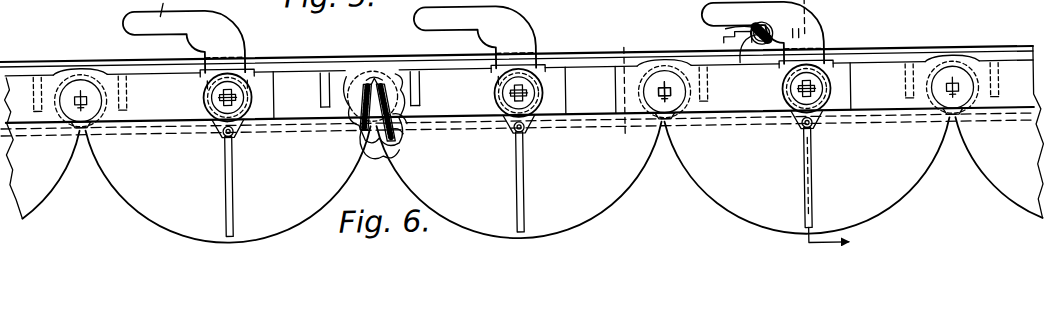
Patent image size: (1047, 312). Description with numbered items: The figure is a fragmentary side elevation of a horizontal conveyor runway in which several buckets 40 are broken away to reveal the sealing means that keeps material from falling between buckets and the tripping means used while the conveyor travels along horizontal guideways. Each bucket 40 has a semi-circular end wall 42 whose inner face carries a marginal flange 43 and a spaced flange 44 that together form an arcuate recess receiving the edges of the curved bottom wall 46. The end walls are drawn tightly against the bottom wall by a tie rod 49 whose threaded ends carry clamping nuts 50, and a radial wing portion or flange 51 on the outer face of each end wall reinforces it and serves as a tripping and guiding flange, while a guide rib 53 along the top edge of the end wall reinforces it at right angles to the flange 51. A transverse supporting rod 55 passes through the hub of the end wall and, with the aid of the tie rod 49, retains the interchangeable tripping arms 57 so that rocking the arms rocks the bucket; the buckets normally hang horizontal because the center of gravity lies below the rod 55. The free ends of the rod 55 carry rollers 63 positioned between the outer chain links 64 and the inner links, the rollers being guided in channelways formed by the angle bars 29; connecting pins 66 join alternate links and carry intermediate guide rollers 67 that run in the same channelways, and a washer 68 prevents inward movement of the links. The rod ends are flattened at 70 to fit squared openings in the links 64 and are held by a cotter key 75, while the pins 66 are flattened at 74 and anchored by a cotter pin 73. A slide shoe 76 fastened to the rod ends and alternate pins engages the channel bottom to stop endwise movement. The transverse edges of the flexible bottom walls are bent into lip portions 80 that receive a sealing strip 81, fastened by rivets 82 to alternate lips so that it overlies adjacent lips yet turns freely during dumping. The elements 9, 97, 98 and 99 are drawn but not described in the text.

The section line indicator for Fig. 9 is at (838, 240).
The angle bars 29 is at (630, 92).
The bucket 40 is at (587, 233).
The end wall 42 is at (187, 190).
The marginal flange 43 is at (380, 162).
The flange 44 is at (400, 126).
The bottom wall 46 is at (398, 140).
The tie rod 49 is at (236, 139).
The clamping nuts 50 is at (222, 139).
The wing portion or flange 51 is at (232, 200).
The guide rib 53 is at (152, 76).
The supporting rod 55 is at (220, 104).
The tripping arms 57 is at (246, 54).
The rollers 63 is at (262, 76).
The outer chain links 64 is at (150, 116).
The connecting pins 66 is at (670, 104).
The intermediate guide rollers 67 is at (80, 77).
The washer 68 is at (159, 8).
The flattened ends of the supporting rod 70 is at (204, 92).
The cotter pin 73 is at (705, 96).
The flattened portions of the pins 74 is at (672, 118).
The cotter key 75 is at (244, 94).
The slide shoe 76 is at (297, 117).
The lip portions 80 is at (365, 112).
The sealing strip 81 is at (376, 86).
The rivets 82 is at (381, 85).
The latch arm 97 is at (740, 40).
The latch bracket 98 is at (728, 51).
The latch roller 99 is at (765, 57).